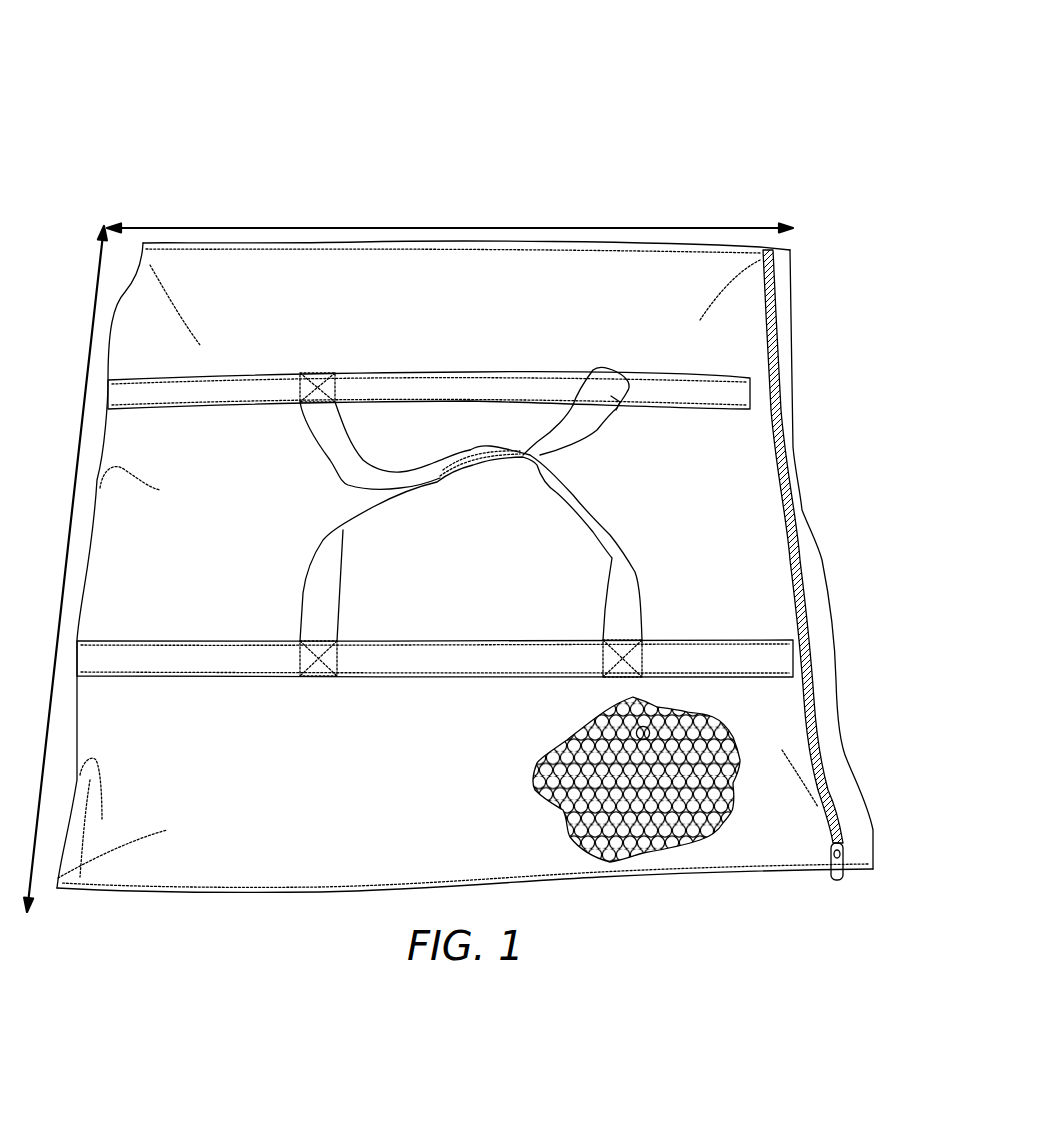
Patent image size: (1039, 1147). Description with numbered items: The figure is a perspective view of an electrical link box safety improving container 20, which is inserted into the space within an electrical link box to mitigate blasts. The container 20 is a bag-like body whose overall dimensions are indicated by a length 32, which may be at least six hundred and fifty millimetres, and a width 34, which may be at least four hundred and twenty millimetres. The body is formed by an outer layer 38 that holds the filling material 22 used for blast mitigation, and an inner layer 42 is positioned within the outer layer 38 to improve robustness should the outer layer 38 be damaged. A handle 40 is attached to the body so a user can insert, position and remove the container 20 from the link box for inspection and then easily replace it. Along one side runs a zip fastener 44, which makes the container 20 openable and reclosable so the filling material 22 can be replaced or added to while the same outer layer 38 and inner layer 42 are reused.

The electrical link box safety improving container 20 is at (680, 146).
The filling material 22 is at (618, 840).
The length 32 is at (73, 517).
The width 34 is at (395, 228).
The outer layer 38 is at (465, 792).
The handle 40 is at (515, 458).
The inner layer 42 is at (648, 740).
The zip fastener 44 is at (774, 392).